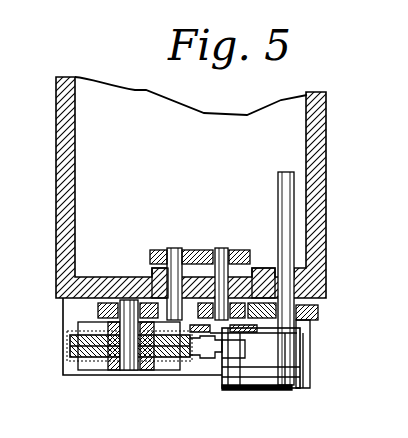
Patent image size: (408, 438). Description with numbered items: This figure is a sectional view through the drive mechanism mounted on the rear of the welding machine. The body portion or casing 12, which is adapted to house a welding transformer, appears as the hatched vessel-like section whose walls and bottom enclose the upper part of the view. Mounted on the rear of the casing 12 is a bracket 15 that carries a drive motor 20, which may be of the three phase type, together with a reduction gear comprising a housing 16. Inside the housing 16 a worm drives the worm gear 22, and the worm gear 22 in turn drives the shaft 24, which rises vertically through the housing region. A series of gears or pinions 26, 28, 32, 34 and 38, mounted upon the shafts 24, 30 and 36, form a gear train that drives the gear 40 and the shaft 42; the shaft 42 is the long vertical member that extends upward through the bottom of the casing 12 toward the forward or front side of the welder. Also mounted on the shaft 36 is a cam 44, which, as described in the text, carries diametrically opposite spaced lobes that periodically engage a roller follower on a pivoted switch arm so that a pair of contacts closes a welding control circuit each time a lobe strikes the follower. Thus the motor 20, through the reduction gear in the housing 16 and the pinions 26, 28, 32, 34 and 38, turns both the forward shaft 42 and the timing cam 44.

The casing 12 is at (62, 212).
The bracket 15 is at (75, 308).
The housing 16 is at (78, 355).
The drive motor 20 is at (296, 390).
The worm gear 22 is at (70, 347).
The shaft 24 is at (126, 370).
The gear 26 is at (110, 303).
The gear 28 is at (152, 276).
The shaft 30 is at (177, 248).
The gear 32 is at (162, 250).
The gear 34 is at (209, 252).
The shaft 36 is at (228, 250).
The gear 38 is at (248, 280).
The gear 40 is at (319, 313).
The shaft 42 is at (290, 238).
The cam 44 is at (245, 333).